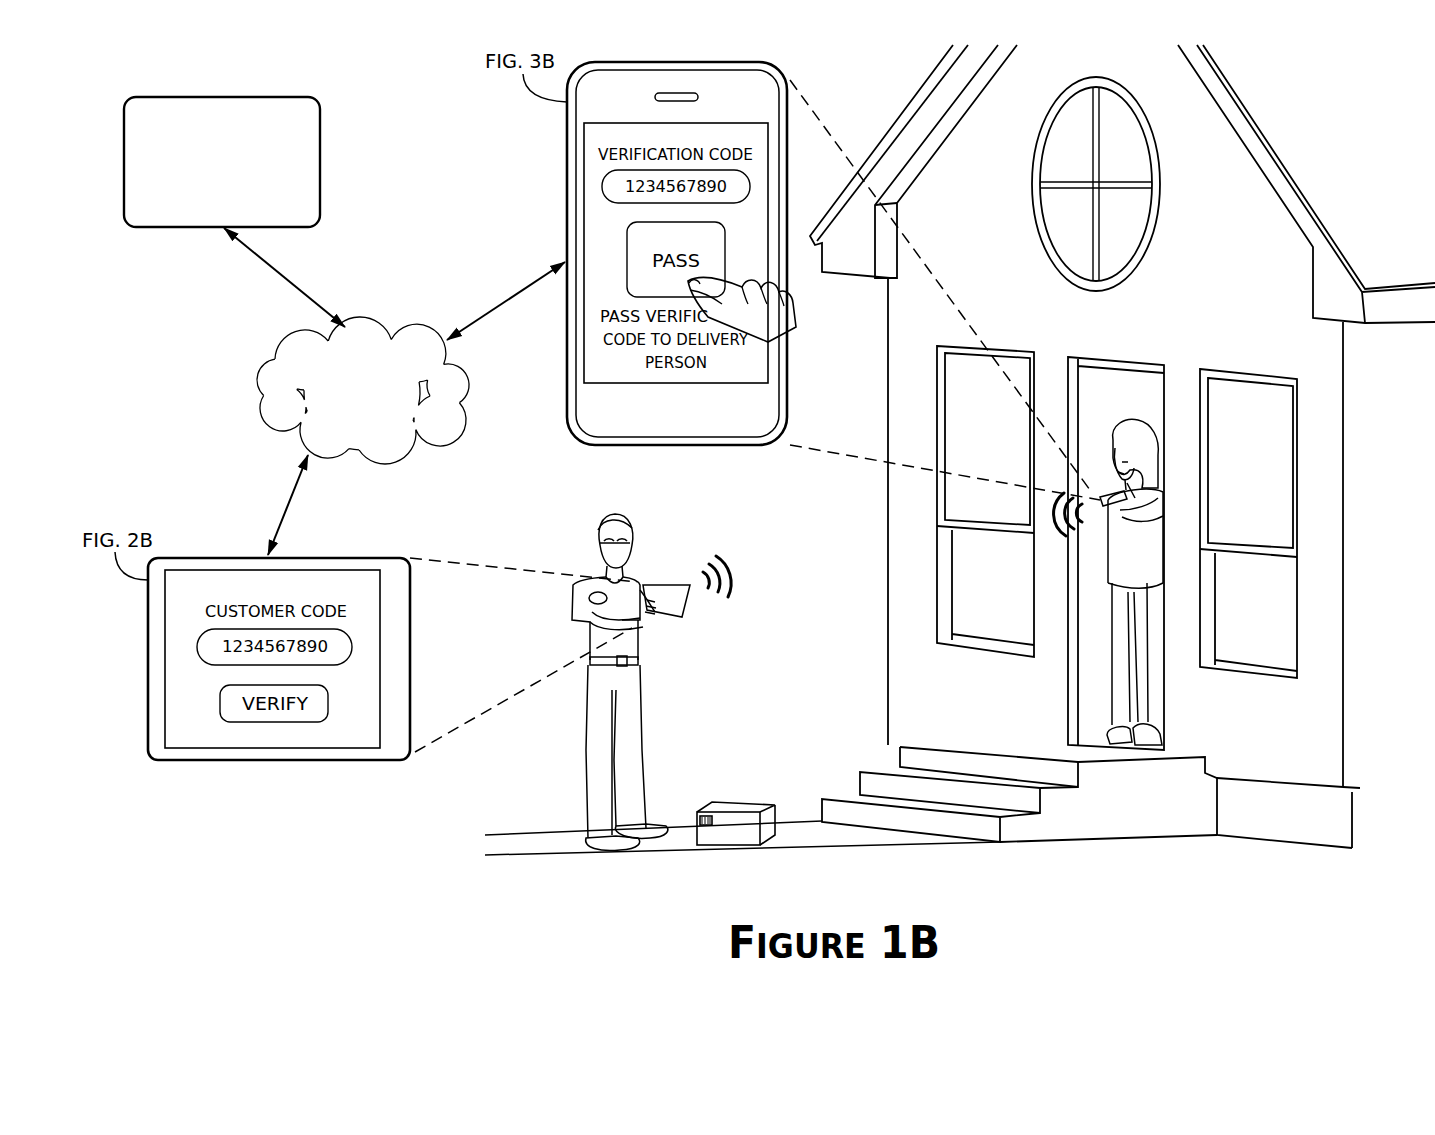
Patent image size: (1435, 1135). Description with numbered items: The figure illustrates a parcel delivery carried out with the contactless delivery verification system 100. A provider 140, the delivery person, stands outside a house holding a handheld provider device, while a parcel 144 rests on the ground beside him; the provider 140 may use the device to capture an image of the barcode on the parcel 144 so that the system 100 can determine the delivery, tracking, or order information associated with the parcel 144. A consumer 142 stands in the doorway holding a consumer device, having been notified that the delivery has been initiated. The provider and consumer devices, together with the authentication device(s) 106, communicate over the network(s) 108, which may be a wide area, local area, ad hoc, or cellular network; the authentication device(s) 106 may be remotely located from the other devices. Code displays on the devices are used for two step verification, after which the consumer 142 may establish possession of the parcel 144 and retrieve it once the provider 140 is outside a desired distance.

The system 100 is at (262, 845).
The authentication device(s) 106 is at (242, 200).
The network(s) 108 is at (378, 419).
The provider 140 is at (590, 757).
The consumer 142 is at (1147, 428).
The parcel 144 is at (773, 805).